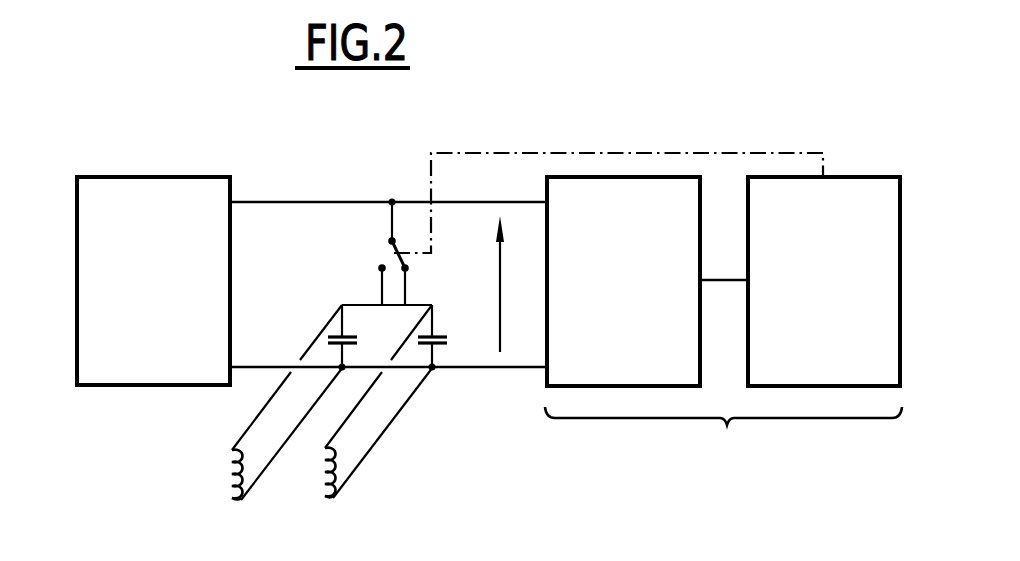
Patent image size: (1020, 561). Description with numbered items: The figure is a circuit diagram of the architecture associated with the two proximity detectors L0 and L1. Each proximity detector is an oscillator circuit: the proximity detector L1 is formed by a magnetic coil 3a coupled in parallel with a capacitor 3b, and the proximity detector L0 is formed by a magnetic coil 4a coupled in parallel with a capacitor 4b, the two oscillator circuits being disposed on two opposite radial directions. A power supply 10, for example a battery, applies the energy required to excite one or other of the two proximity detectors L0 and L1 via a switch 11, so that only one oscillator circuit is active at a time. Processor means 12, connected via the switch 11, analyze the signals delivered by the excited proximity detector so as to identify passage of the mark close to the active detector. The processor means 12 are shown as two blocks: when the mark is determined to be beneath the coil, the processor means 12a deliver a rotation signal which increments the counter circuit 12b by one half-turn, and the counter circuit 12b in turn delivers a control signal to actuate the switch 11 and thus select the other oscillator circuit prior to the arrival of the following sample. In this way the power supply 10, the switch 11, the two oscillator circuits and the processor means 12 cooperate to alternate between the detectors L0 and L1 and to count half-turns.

The power supply 10 is at (164, 295).
The switch 11 is at (393, 253).
The magnetic coil 3a is at (232, 487).
The capacitor 3b is at (360, 342).
The magnetic coil 4a is at (325, 473).
The capacitor 4b is at (447, 342).
The proximity detector L1 is at (267, 427).
The proximity detector L0 is at (388, 410).
The processor means 12 is at (723, 330).
The processor means 12a is at (641, 295).
The counter circuit 12b is at (846, 295).